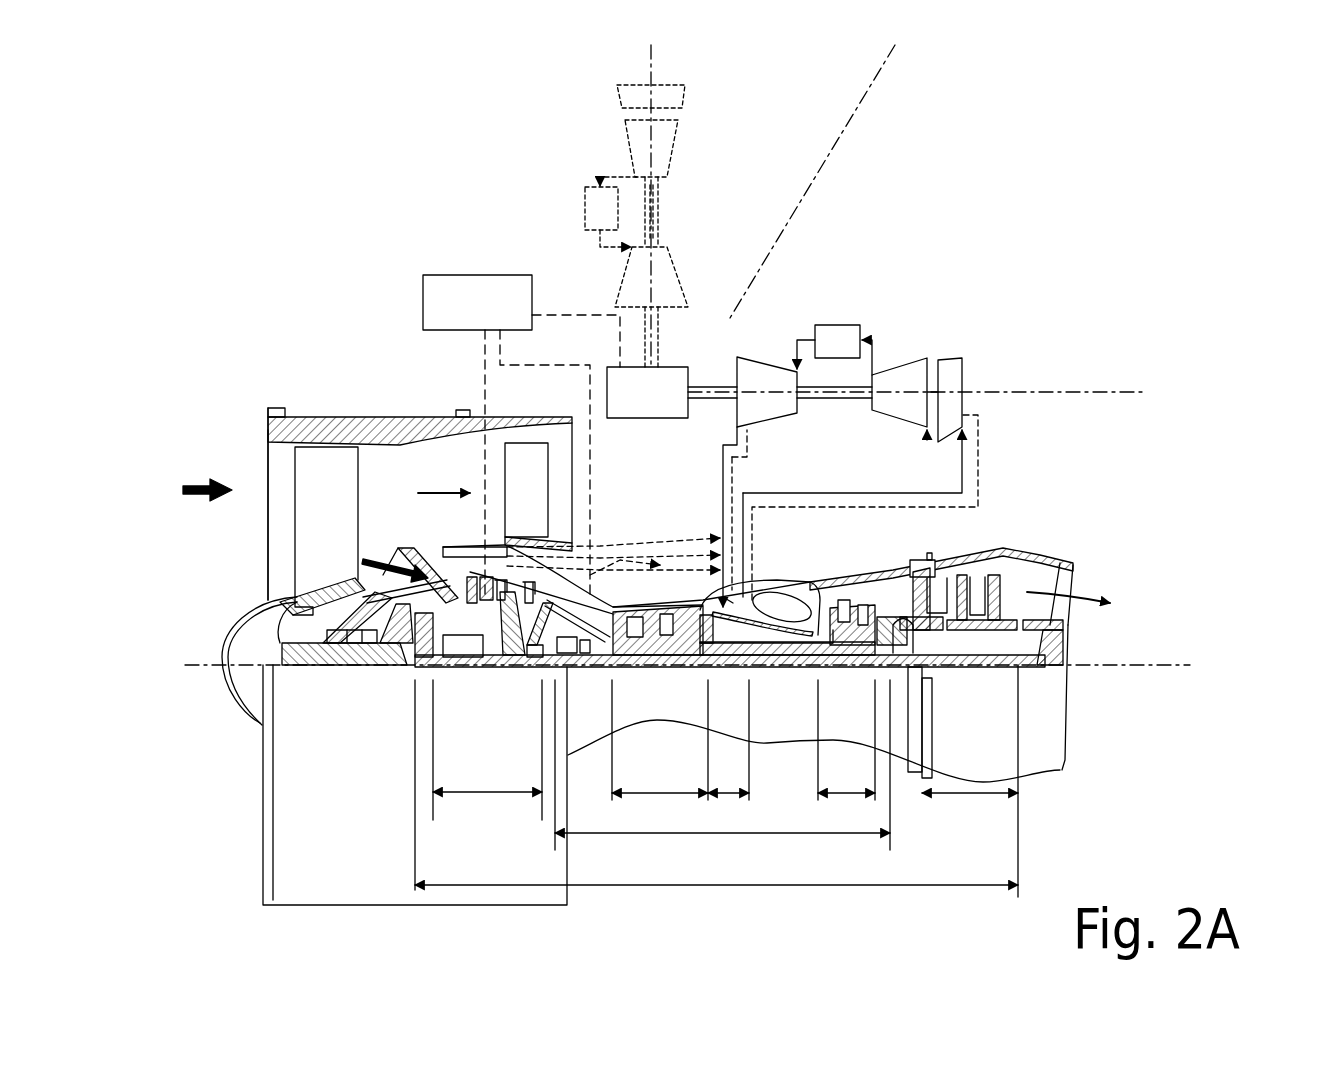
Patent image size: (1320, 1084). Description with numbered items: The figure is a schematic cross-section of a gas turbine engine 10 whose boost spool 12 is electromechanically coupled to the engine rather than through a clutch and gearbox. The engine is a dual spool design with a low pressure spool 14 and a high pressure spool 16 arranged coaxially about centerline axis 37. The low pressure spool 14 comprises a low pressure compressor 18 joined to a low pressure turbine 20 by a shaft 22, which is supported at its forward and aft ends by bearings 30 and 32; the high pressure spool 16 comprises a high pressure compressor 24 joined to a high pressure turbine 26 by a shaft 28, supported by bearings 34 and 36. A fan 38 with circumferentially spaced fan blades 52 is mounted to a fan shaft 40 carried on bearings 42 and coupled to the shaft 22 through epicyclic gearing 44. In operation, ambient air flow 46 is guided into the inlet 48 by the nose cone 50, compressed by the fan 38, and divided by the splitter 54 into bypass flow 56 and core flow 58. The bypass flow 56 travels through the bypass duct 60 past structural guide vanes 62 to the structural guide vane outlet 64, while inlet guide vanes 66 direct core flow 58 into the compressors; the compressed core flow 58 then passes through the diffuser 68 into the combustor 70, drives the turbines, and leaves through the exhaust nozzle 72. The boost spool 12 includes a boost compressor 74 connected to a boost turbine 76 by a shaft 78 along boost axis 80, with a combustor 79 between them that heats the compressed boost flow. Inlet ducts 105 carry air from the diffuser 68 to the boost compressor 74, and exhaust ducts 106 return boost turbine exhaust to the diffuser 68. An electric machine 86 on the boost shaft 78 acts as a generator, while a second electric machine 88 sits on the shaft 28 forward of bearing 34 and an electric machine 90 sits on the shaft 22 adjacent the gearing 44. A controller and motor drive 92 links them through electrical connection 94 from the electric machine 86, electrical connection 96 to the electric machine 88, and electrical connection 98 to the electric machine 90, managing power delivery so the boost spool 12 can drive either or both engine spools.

The gas turbine engine 10 is at (337, 910).
The boost spool 12 is at (990, 300).
The low pressure spool 14 is at (737, 791).
The high pressure spool 16 is at (722, 772).
The low pressure compressor 18 is at (487, 752).
The low pressure turbine 20 is at (970, 809).
The shaft 22 is at (437, 668).
The high pressure compressor 24 is at (660, 752).
The high pressure turbine 26 is at (846, 752).
The shaft 28 is at (768, 645).
The bearing 30 is at (525, 670).
The bearing 32 is at (940, 640).
The bearing 34 is at (590, 680).
The bearing 36 is at (885, 668).
The centerline axis 37 is at (1143, 668).
The fan 38 is at (290, 467).
The fan shaft 40 is at (268, 630).
The bearings 42 is at (358, 645).
The gearing 44 is at (398, 682).
The ambient air flow 46 is at (193, 483).
The inlet 48 is at (265, 533).
The nose cone 50 is at (222, 657).
The fan blades 52 is at (325, 531).
The splitter 54 is at (396, 548).
The bypass flow 56 is at (445, 493).
The core flow 58 is at (393, 547).
The bypass duct 60 is at (340, 537).
The structural guide vanes 62 is at (519, 523).
The structural guide vane outlet 64 is at (572, 422).
The inlet guide vanes 66 is at (363, 561).
The diffuser 68 is at (707, 607).
The combustor 70 is at (800, 600).
The exhaust nozzle 72 is at (1075, 565).
The boost compressor 74 is at (905, 358).
The boost turbine 76 is at (765, 357).
The shaft 78 is at (848, 402).
The combustor 79 is at (838, 325).
The boost axis 80 is at (651, 128).
The electric machine 86 is at (672, 367).
The electric machine 88 is at (605, 610).
The electric machine 90 is at (455, 635).
The controller and motor drive 92 is at (477, 302).
The electrical connection 94 is at (560, 315).
The electrical connection 96 is at (532, 366).
The electrical connection 98 is at (483, 383).
The inlet duct 105 is at (662, 555).
The exhaust duct 106 is at (750, 447).